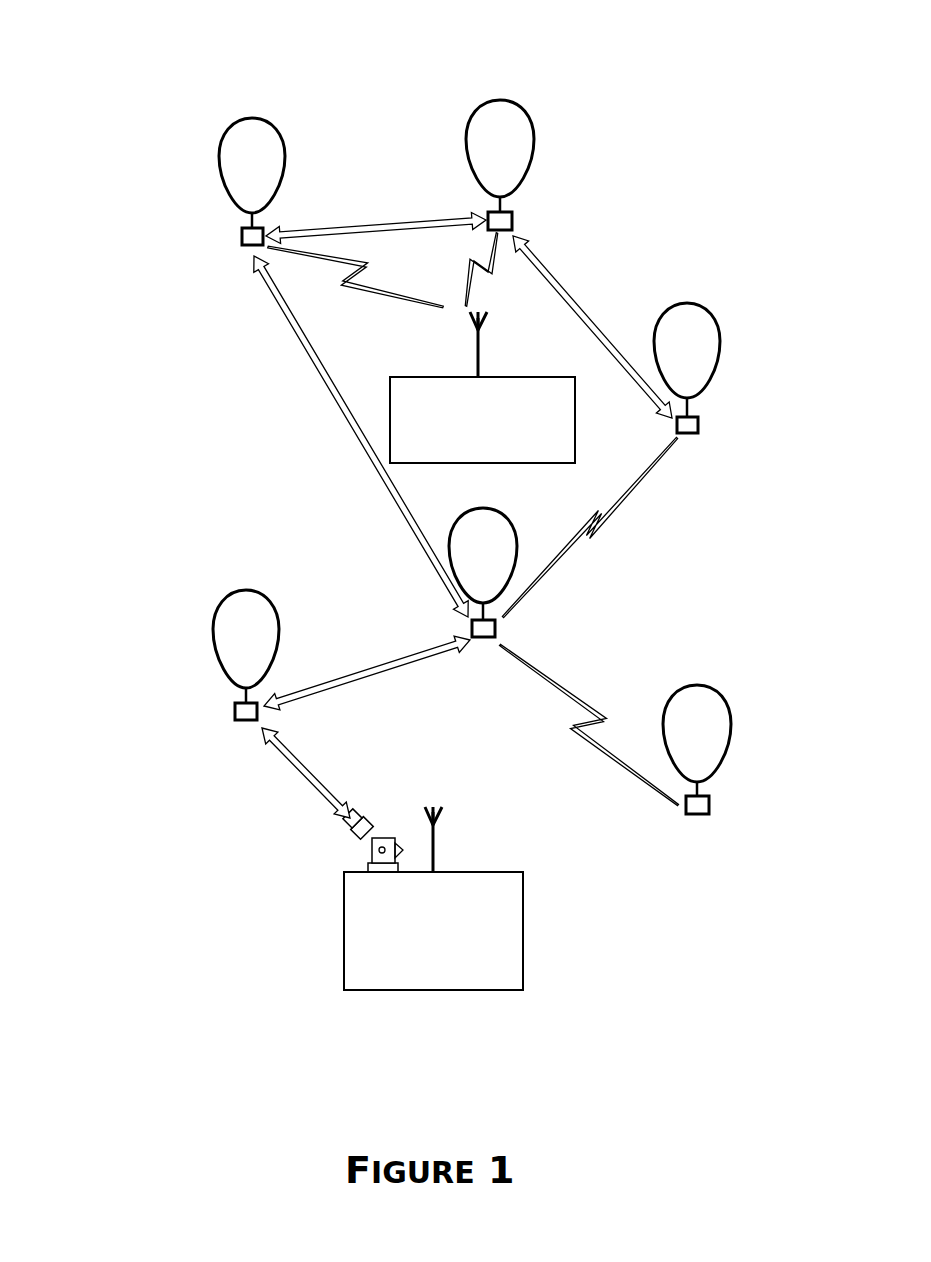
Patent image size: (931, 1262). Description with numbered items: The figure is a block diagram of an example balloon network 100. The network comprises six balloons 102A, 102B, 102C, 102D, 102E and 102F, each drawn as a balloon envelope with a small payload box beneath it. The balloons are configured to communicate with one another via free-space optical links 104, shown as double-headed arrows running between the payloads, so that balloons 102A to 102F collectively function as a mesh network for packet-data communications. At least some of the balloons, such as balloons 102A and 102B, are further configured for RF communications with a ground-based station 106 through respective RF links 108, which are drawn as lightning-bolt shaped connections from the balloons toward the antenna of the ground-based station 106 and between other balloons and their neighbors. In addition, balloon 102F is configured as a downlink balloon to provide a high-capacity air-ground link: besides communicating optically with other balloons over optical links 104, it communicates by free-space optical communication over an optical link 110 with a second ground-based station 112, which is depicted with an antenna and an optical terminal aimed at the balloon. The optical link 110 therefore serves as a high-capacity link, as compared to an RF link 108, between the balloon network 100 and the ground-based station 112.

The balloon network 100 is at (115, 62).
The balloon 102A is at (245, 115).
The balloon 102B is at (497, 98).
The balloon 102C is at (478, 505).
The balloon 102D is at (695, 683).
The balloon 102E is at (688, 300).
The downlink balloon 102F is at (242, 590).
The free-space optical link 104 is at (368, 213).
The ground-based station 106 is at (482, 387).
The RF link 108 is at (362, 262).
The optical link 110 is at (308, 760).
The ground-based station 112 is at (432, 898).